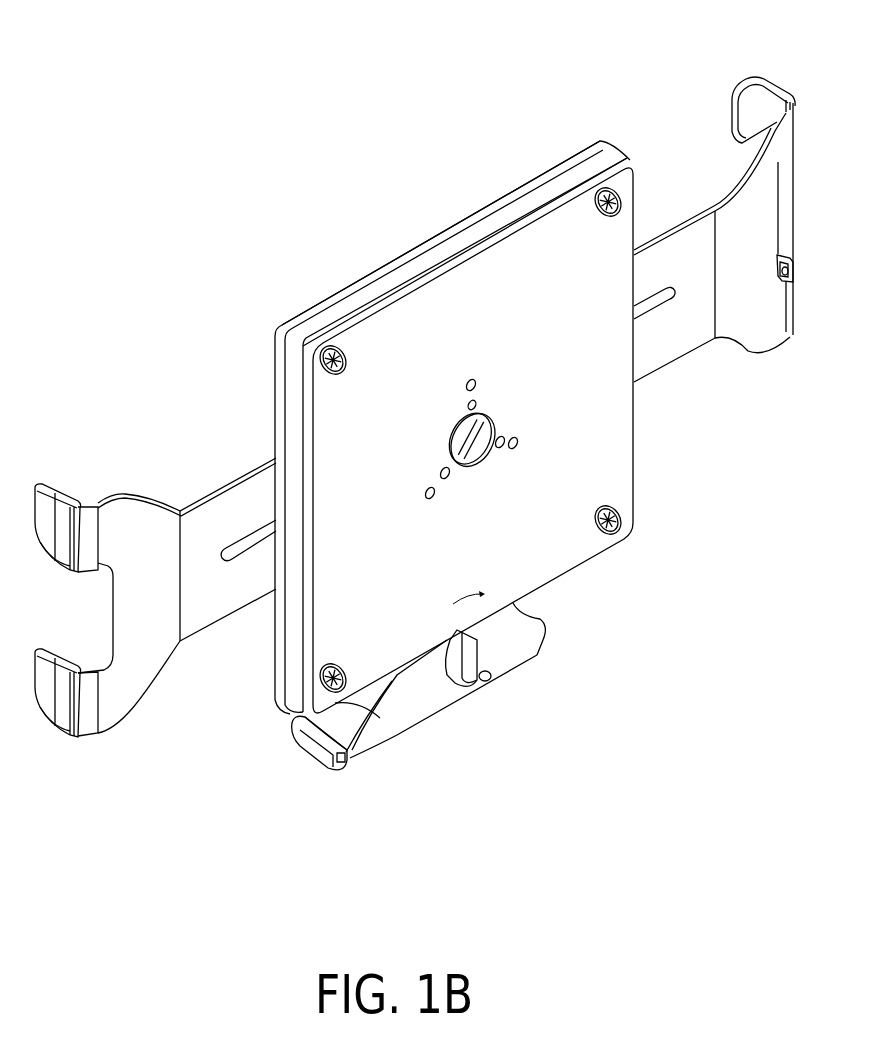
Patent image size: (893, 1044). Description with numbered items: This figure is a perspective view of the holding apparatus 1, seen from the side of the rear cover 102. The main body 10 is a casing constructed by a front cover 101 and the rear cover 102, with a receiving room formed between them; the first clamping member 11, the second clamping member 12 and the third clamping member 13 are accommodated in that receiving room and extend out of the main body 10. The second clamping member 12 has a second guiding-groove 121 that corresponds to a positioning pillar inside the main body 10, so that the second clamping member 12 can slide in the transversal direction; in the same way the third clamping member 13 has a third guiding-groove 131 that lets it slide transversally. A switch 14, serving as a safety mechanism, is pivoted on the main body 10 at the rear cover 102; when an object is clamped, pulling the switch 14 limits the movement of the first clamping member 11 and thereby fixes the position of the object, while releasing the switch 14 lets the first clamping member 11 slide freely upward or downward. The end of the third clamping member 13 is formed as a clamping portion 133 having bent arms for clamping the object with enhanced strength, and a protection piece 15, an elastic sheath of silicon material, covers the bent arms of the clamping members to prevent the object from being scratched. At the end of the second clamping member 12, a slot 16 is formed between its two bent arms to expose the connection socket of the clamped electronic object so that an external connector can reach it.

The holding apparatus 1 is at (208, 76).
The main body 10 is at (480, 197).
The front cover 101 is at (350, 283).
The rear cover 102 is at (600, 478).
The first clamping member 11 is at (528, 640).
The second clamping member 12 is at (682, 255).
The second guiding-groove 121 is at (652, 312).
The third clamping member 13 is at (211, 512).
The third guiding-groove 131 is at (240, 548).
The clamping portion 133 is at (88, 523).
The switch 14 is at (470, 665).
The protection piece 15 is at (60, 495).
The slot 16 is at (790, 190).